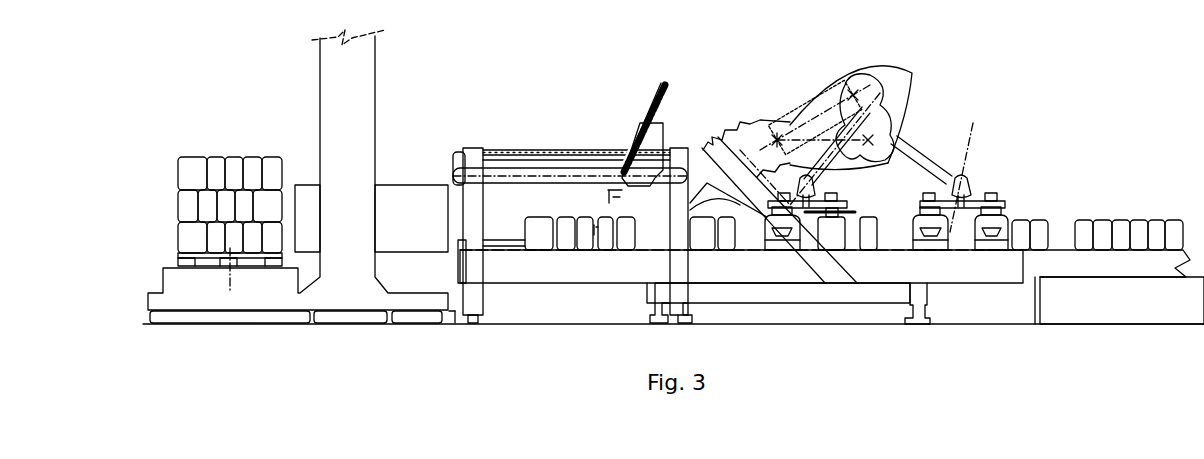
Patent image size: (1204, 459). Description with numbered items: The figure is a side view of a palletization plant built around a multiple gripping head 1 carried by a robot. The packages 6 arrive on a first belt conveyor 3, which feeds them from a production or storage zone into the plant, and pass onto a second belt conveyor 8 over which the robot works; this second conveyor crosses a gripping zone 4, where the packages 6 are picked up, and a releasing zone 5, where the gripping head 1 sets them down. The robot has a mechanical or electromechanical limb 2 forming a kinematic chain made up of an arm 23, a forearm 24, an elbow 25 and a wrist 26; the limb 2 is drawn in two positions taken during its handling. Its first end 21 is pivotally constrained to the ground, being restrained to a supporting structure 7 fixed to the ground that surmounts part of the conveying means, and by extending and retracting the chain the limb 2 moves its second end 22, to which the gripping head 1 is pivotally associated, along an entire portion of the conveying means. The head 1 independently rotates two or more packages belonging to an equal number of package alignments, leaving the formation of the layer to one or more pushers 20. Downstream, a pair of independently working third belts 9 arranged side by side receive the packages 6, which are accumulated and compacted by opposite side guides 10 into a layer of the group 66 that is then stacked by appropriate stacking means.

The multiple gripping head 1 is at (985, 195).
The limb 2 is at (869, 141).
The first belt conveyor 3 is at (1138, 265).
The gripping zone 4 is at (956, 270).
The releasing zone 5 is at (782, 266).
The packages 6 is at (1100, 232).
The supporting structure 7 is at (695, 180).
The second belt conveyor 8 is at (983, 273).
The third belt 9 is at (583, 268).
The side guides 10 is at (502, 240).
The pusher 20 is at (577, 147).
The first end 21 is at (745, 139).
The second end 22 is at (986, 177).
The arm 23 is at (827, 118).
The forearm 24 is at (912, 160).
The elbow 25 is at (875, 98).
The wrist 26 is at (812, 184).
The group 66 is at (191, 149).